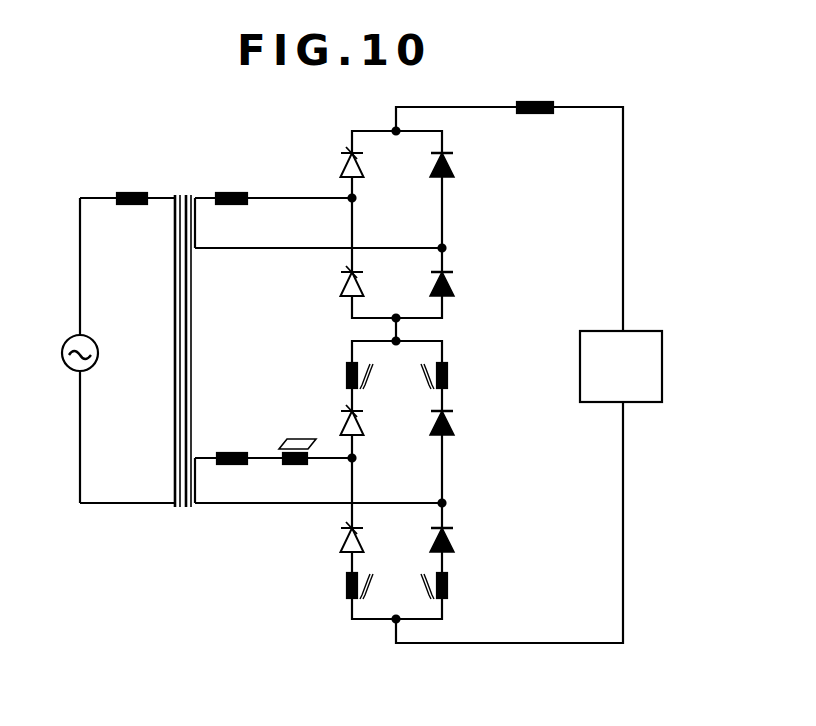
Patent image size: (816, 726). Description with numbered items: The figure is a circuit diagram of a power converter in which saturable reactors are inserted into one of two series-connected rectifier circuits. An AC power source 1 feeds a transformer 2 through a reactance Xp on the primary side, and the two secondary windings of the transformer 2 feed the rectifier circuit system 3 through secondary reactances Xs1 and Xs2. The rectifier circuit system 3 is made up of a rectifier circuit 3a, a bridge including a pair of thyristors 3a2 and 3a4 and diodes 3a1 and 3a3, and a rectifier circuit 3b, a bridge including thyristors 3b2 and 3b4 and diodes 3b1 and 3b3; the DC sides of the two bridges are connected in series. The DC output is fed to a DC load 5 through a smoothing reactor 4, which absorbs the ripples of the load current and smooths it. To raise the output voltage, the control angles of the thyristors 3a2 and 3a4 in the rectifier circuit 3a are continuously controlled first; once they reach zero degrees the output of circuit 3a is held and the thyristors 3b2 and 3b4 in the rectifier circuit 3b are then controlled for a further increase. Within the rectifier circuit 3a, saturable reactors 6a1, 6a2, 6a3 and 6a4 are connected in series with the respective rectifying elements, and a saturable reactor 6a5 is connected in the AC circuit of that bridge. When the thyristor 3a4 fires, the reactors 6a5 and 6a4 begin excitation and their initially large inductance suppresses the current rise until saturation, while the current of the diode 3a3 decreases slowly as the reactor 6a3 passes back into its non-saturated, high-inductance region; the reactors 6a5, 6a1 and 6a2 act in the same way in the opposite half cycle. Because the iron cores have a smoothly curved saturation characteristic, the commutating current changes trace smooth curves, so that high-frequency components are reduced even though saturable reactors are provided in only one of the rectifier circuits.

The AC power source 1 is at (70, 340).
The transformer 2 is at (185, 333).
The rectifier circuit system 3 is at (372, 105).
The rectifier circuit 3a is at (486, 495).
The rectifier circuit 3b is at (484, 242).
The diode 3a1 is at (455, 550).
The thyristor 3a2 is at (364, 550).
The diode 3a3 is at (455, 433).
The thyristor 3a4 is at (364, 433).
The diode 3b1 is at (455, 294).
The thyristor 3b2 is at (364, 294).
The diode 3b3 is at (455, 175).
The thyristor 3b4 is at (364, 175).
The smoothing reactor 4 is at (542, 101).
The DC load 5 is at (664, 339).
The saturable reactor 6a1 is at (448, 585).
The saturable reactor 6a2 is at (369, 585).
The saturable reactor 6a3 is at (448, 375).
The saturable reactor 6a4 is at (369, 375).
The saturable reactor 6a5 is at (298, 438).
The reactance Xp is at (128, 192).
The reactance Xs1 is at (233, 452).
The reactance Xs2 is at (231, 192).